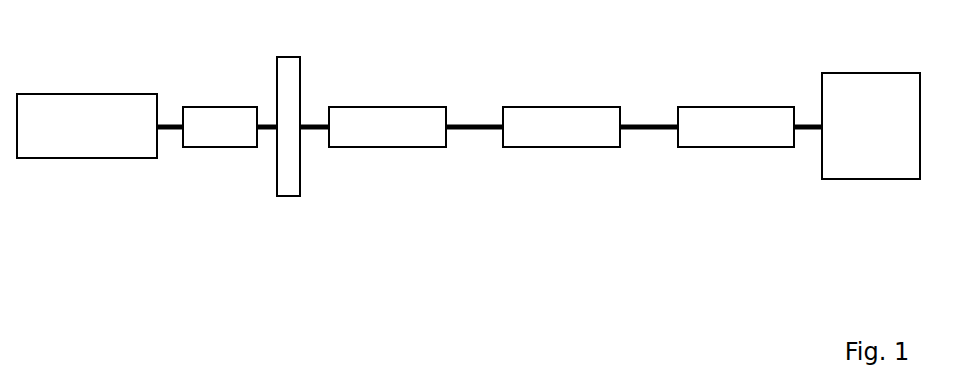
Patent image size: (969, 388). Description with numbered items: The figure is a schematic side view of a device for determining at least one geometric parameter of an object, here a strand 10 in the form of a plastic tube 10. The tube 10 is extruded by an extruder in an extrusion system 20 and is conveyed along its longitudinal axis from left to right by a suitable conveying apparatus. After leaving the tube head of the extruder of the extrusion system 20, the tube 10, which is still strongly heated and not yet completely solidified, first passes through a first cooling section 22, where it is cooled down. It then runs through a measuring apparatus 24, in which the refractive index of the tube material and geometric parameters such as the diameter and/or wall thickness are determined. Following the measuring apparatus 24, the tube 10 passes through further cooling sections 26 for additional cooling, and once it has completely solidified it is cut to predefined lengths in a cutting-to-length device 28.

The strand 10 is at (168, 118).
The extrusion system 20 is at (92, 143).
The first cooling section 22 is at (218, 131).
The measuring apparatus 24 is at (289, 185).
The further cooling sections 26 is at (391, 131).
The cutting-to-length device 28 is at (879, 167).